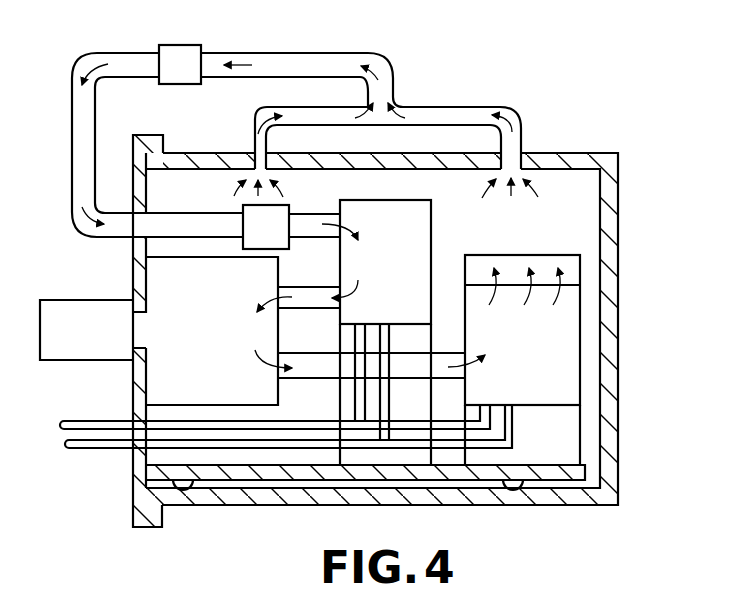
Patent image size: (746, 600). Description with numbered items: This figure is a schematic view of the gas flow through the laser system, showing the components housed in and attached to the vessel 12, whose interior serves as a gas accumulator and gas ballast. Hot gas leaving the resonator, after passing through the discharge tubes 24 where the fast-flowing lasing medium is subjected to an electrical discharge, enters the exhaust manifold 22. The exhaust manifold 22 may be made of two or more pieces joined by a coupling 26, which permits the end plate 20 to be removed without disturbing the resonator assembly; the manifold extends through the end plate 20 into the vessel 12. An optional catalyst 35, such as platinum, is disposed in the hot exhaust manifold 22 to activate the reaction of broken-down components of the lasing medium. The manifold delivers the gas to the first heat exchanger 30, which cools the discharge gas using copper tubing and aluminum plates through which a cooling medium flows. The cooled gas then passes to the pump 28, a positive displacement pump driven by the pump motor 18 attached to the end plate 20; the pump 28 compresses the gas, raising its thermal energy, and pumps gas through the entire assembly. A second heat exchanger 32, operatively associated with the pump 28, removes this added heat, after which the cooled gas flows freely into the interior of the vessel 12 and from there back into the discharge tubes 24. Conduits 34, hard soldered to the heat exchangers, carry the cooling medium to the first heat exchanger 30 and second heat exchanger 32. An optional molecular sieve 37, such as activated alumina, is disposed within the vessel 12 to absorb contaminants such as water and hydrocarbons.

The vessel 12 is at (568, 153).
The pump motor 18 is at (57, 300).
The end plate 20 is at (150, 113).
The exhaust manifold 22 is at (75, 80).
The discharge tubes 24 is at (440, 107).
The coupling 26 is at (172, 45).
The pump 28 is at (208, 342).
The first heat exchanger 30 is at (414, 276).
The second heat exchanger 32 is at (552, 362).
The conduits 34 is at (80, 430).
The catalyst 35 is at (290, 205).
The molecular sieve 37 is at (572, 256).